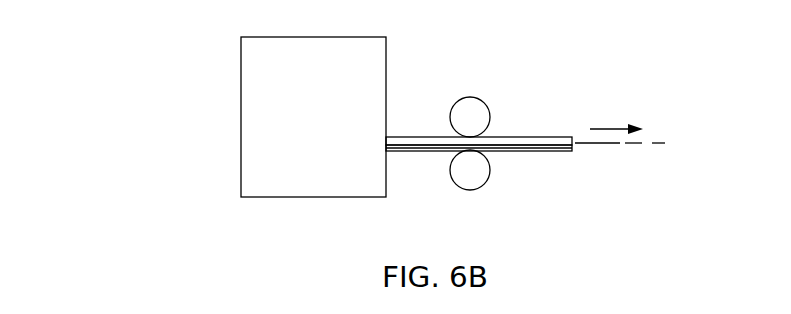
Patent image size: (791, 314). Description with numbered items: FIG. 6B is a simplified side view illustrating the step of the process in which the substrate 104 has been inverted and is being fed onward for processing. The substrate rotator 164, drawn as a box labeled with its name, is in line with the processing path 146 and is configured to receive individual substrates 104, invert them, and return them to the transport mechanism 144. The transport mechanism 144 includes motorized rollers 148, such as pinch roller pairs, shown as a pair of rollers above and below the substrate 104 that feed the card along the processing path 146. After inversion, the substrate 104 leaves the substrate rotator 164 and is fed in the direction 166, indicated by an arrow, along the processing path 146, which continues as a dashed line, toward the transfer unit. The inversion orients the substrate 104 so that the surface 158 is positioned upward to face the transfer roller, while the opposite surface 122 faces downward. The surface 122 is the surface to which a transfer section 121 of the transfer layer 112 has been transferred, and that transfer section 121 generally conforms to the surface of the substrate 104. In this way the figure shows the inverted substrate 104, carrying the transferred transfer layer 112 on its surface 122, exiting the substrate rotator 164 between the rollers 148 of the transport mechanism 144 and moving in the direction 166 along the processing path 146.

The substrate rotator 164 is at (241, 63).
The substrate 104 is at (408, 136).
The transfer layer 112 is at (425, 152).
The transfer section 121 is at (510, 152).
The surface 122 is at (539, 160).
The transport mechanism 144 is at (488, 70).
The motorized rollers 148 is at (465, 188).
The surface 158 is at (544, 125).
The direction 166 is at (617, 126).
The processing path 146 is at (629, 147).